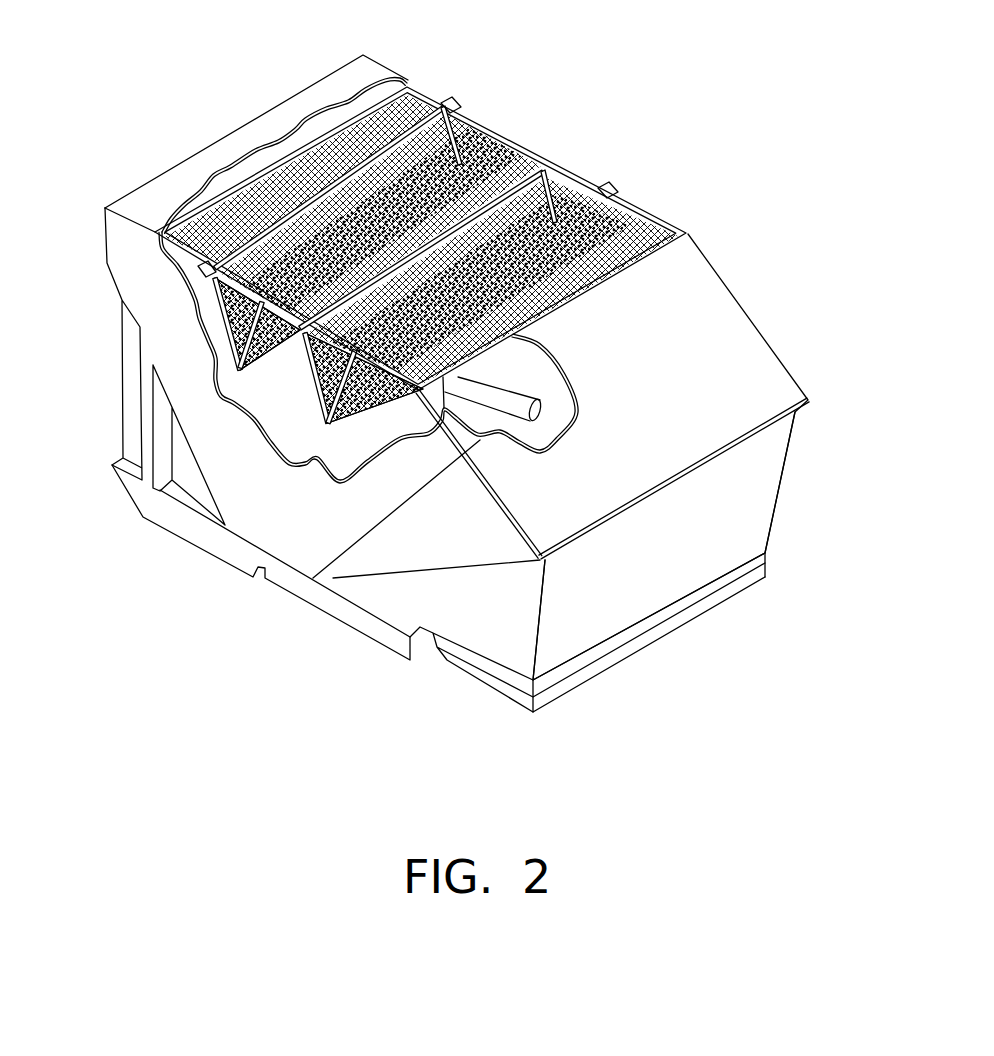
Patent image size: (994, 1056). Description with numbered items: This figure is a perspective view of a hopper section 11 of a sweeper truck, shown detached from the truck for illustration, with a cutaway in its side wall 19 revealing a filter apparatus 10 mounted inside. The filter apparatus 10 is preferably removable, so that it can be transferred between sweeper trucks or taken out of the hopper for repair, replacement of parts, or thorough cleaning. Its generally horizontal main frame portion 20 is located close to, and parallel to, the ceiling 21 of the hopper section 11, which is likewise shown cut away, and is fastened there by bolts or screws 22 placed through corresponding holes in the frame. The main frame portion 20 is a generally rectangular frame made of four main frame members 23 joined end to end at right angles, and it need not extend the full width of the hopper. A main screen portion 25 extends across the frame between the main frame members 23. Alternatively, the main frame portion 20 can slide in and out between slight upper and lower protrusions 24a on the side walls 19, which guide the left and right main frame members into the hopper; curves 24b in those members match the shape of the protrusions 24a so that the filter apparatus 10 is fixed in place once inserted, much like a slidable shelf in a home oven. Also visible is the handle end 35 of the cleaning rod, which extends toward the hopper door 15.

The filter apparatus 10 is at (632, 90).
The hopper section 11 is at (752, 274).
The hopper door 15 is at (747, 437).
The side wall 19 is at (253, 492).
The main frame portion 20 is at (531, 126).
The ceiling 21 is at (265, 123).
The bolts or screws 22 is at (405, 87).
The main frame members 23 is at (345, 98).
The protrusions 24a is at (443, 108).
The curves 24b is at (200, 270).
The main screen portion 25 is at (243, 190).
The handle end 35 is at (500, 403).